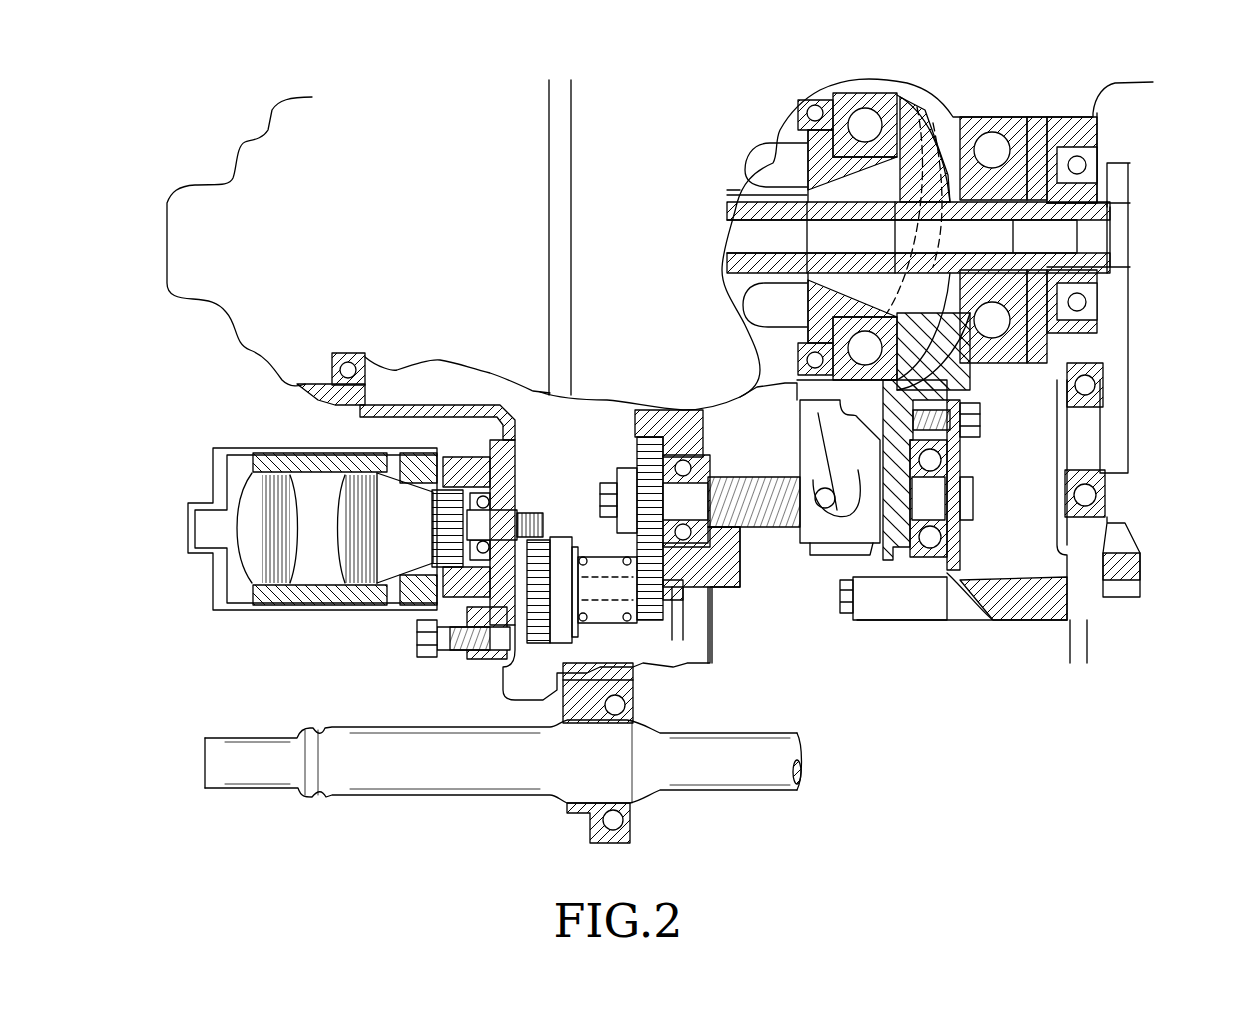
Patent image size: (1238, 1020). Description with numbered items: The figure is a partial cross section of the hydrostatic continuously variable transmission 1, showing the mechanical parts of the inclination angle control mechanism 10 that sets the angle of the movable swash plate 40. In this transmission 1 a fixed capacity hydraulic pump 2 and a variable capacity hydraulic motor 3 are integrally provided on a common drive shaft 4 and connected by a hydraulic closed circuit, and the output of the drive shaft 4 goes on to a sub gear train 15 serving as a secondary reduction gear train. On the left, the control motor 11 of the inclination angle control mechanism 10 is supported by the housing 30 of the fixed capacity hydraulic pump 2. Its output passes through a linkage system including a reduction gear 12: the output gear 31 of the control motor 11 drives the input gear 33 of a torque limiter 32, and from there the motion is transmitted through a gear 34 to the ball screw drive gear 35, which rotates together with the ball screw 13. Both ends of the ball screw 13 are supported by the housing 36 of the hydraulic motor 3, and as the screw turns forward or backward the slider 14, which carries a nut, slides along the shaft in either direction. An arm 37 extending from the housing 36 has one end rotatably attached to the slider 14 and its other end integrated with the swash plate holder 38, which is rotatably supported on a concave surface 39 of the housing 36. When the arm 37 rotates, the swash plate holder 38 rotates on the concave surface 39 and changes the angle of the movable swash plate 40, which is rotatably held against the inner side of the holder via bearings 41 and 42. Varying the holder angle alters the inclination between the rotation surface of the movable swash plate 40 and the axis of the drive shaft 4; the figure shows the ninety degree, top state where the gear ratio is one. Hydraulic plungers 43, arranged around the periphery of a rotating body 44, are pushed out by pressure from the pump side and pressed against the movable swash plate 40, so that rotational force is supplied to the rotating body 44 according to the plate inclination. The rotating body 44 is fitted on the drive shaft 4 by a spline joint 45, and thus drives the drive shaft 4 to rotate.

The hydrostatic continuously variable transmission 1 is at (198, 145).
The fixed capacity hydraulic pump 2 is at (402, 221).
The variable capacity hydraulic motor 3 is at (605, 269).
The drive shaft 4 is at (840, 213).
The inclination angle control mechanism 10 is at (380, 677).
The control motor 11 is at (267, 573).
The reduction gear 12 is at (667, 650).
The ball screw 13 is at (765, 530).
The slider 14 is at (837, 537).
The sub gear train 15 is at (1143, 605).
The housing 30 is at (462, 403).
The output gear 31 is at (523, 500).
The torque limiter 32 is at (563, 547).
The input gear 33 is at (520, 633).
The gear 34 is at (643, 607).
The ball screw drive gear 35 is at (647, 462).
The housing 36 is at (947, 388).
The arm 37 is at (807, 457).
The swash plate holder 38 is at (889, 242).
The concave surface 39 is at (950, 120).
The movable swash plate 40 is at (820, 335).
The bearing 41 is at (800, 367).
The bearing 42 is at (873, 337).
The hydraulic plungers 43 is at (778, 165).
The rotating body 44 is at (740, 190).
The spline joint 45 is at (738, 195).